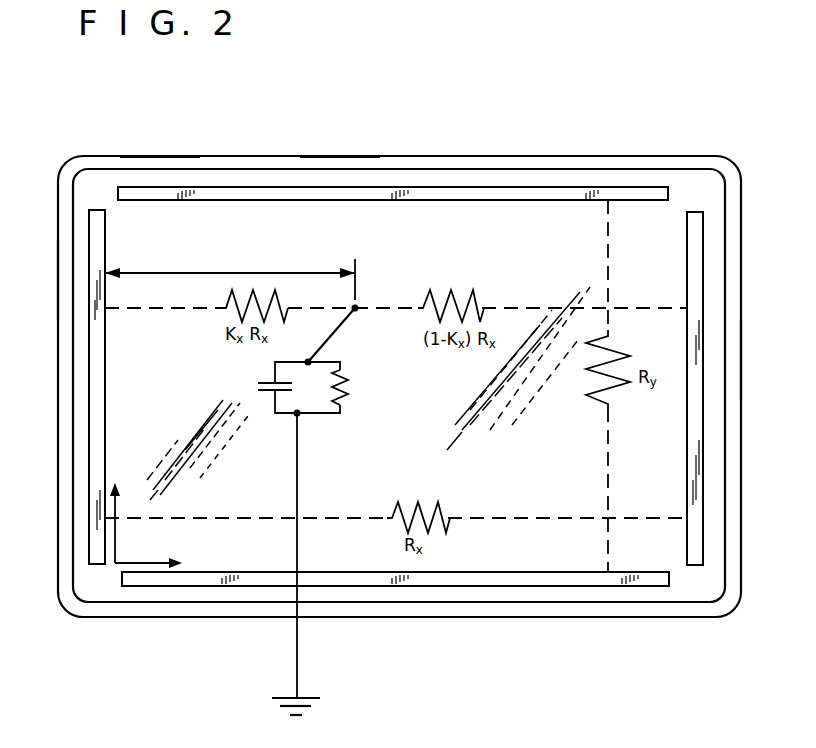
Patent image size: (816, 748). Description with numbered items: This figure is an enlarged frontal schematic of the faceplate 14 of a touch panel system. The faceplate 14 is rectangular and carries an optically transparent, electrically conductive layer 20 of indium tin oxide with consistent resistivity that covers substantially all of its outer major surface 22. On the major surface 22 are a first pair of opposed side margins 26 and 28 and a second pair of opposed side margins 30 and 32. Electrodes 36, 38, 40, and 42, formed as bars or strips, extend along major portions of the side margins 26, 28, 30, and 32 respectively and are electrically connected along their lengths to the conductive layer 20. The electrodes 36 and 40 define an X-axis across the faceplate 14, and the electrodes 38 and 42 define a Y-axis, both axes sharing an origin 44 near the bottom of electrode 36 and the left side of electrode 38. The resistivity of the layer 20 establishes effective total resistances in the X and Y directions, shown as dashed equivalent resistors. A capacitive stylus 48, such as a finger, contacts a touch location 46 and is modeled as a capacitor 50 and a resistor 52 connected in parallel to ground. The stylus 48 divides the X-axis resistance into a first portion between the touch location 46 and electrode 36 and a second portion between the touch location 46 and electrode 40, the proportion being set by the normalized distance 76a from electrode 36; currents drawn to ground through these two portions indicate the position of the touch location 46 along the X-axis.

The faceplate 14 is at (100, 154).
The electrically conductive layer 20 is at (78, 186).
The outer major surface 22 is at (158, 163).
The side margin 26 is at (63, 275).
The side margin 28 is at (405, 603).
The side margin 30 is at (732, 368).
The side margin 32 is at (328, 160).
The electrode 36 is at (98, 402).
The electrode 38 is at (488, 590).
The electrode 40 is at (697, 505).
The electrode 42 is at (438, 193).
The origin 44 is at (117, 561).
The touch location 46 is at (358, 302).
The capacitive stylus 48 is at (338, 332).
The capacitor 50 is at (272, 380).
The resistor 52 is at (348, 384).
The normalized distance 76a is at (223, 273).